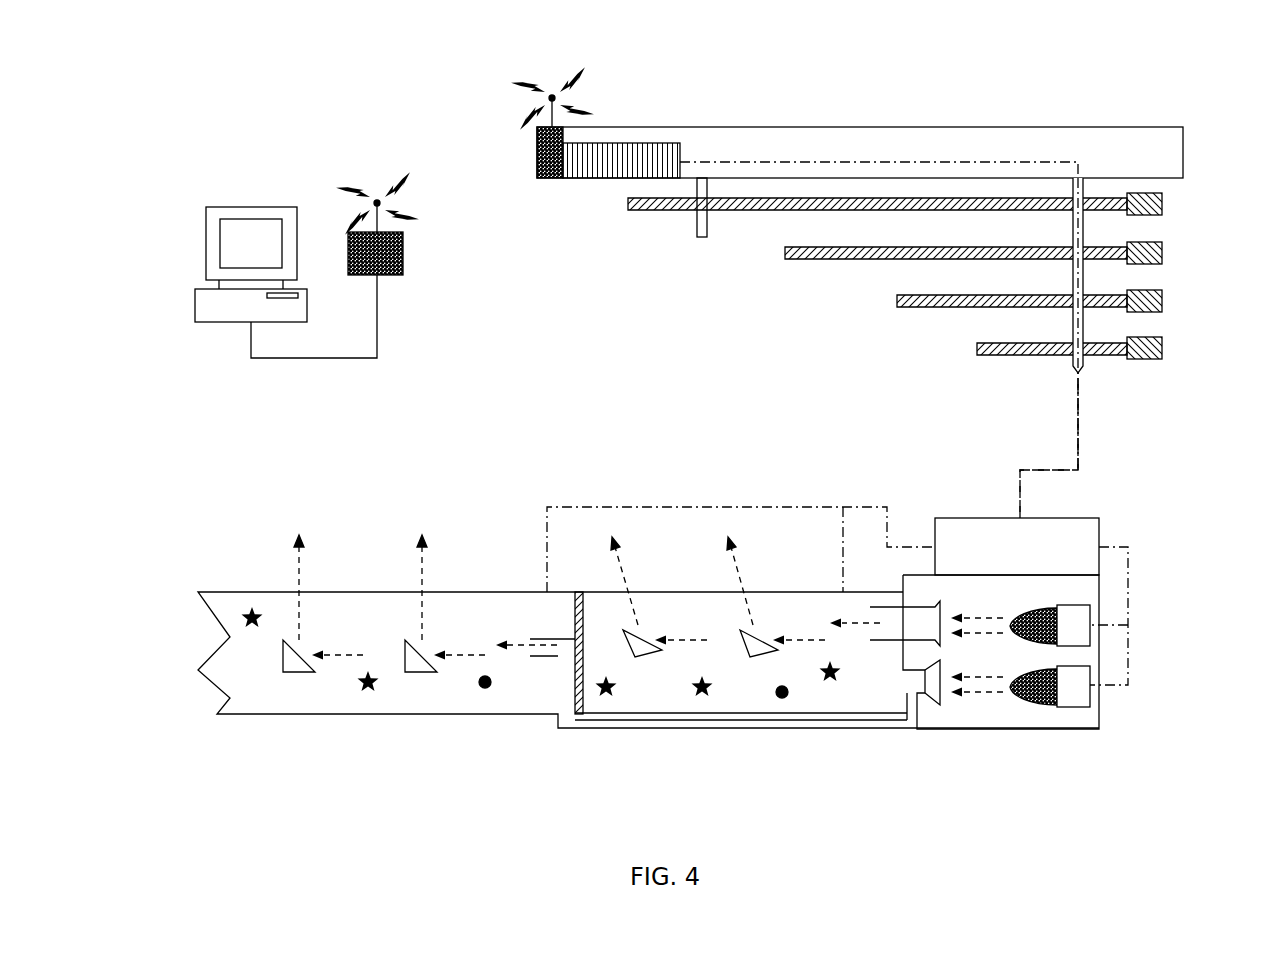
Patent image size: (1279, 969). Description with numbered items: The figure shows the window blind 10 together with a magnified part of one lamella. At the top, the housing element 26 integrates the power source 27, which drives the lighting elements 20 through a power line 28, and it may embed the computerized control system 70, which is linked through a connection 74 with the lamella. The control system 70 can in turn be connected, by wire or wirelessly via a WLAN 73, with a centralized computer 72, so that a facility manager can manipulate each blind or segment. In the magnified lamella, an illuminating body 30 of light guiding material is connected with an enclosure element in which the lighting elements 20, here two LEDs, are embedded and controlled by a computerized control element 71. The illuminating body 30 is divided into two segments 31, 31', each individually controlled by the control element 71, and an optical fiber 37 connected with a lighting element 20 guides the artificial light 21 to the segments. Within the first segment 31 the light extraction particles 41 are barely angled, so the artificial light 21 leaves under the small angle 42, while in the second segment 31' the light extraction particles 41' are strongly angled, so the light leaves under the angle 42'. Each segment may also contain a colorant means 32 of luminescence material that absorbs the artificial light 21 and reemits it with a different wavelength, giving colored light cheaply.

The window blind 10 is at (1190, 116).
The lighting element 20 is at (1078, 615).
The artificial light 21 is at (304, 553).
The housing element 26 is at (1007, 135).
The power source 27 is at (655, 143).
The power line 28 is at (1085, 364).
The illuminating body 30 is at (262, 690).
The first segment 31 is at (783, 738).
The second segment 31' is at (490, 726).
The colorant means 32 is at (250, 606).
The optical fiber 37 is at (567, 718).
The light extraction particles 41 is at (700, 668).
The light extraction particles 41' is at (361, 705).
The small angle 42 is at (745, 591).
The angle 42' is at (434, 610).
The computerized control system 70 is at (550, 168).
The computerized control element 71 is at (1087, 534).
The centralized computer 72 is at (233, 247).
The WLAN 73 is at (507, 95).
The connection 74 is at (1072, 426).